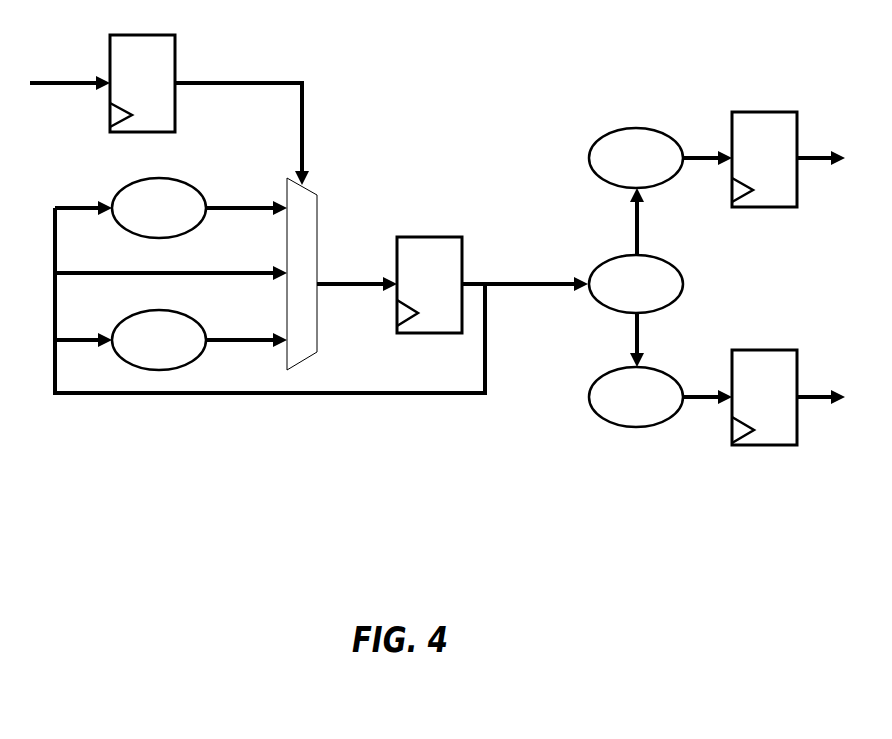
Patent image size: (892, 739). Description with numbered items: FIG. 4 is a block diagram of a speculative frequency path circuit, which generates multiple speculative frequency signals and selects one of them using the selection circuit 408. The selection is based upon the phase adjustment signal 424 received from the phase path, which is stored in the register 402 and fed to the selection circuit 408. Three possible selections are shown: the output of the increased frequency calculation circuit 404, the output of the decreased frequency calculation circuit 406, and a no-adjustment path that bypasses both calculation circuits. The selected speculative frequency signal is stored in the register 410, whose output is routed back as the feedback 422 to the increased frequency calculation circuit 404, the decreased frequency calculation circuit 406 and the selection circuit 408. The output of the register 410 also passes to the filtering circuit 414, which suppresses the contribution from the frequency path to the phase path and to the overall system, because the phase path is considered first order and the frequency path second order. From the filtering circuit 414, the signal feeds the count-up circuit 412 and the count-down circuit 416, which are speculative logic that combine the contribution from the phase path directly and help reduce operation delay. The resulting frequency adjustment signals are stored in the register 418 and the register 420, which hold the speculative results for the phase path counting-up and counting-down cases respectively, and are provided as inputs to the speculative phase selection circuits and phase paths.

The register 402 is at (150, 35).
The increased frequency calculation circuit 404 is at (160, 182).
The decreased frequency calculation circuit 406 is at (162, 321).
The selection circuit 408 is at (309, 197).
The register 410 is at (430, 243).
The count-up circuit 412 is at (627, 131).
The filtering circuit 414 is at (642, 257).
The count-down circuit 416 is at (643, 371).
The register 418 is at (768, 116).
The register 420 is at (754, 354).
The feedback 422 is at (365, 392).
The phase adjustment signal 424 is at (38, 79).